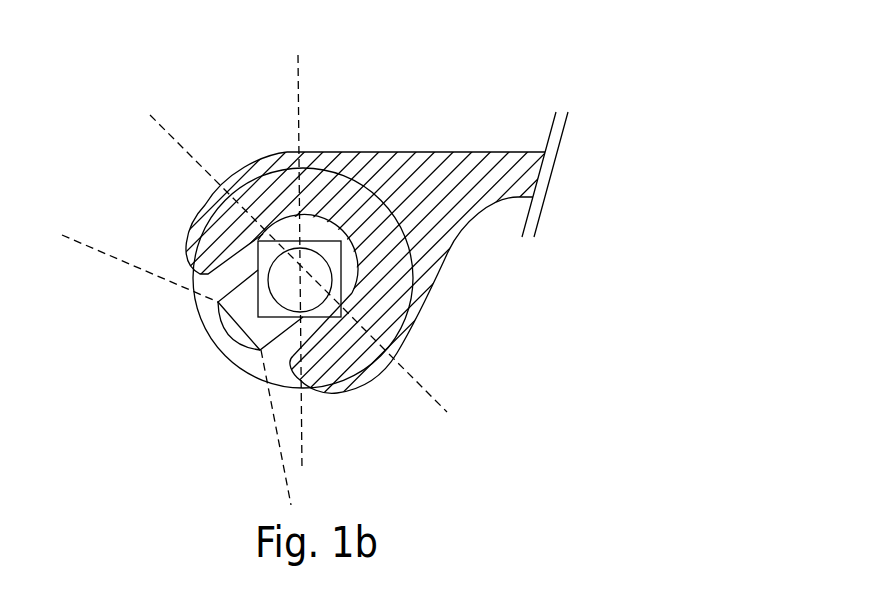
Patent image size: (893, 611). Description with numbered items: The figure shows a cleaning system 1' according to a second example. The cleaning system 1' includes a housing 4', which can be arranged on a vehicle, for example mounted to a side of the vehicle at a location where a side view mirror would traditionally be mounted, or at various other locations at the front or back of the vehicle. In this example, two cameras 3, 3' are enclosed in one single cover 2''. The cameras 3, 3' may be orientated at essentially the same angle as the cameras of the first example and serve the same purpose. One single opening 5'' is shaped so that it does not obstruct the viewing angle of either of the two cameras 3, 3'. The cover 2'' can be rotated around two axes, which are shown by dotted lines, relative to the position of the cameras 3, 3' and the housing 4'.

The cleaning system 1' is at (383, 206).
The housing 4' is at (317, 251).
The cover 2'' is at (254, 248).
The camera 3' is at (325, 336).
The opening 5'' is at (258, 342).
The camera 3 is at (218, 347).